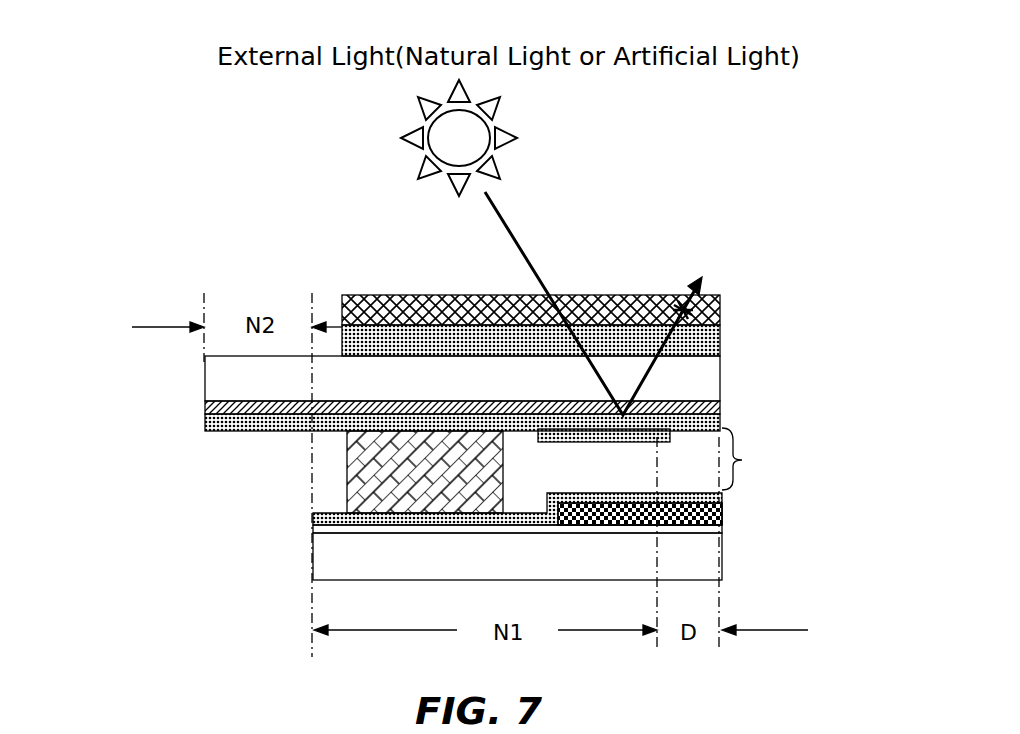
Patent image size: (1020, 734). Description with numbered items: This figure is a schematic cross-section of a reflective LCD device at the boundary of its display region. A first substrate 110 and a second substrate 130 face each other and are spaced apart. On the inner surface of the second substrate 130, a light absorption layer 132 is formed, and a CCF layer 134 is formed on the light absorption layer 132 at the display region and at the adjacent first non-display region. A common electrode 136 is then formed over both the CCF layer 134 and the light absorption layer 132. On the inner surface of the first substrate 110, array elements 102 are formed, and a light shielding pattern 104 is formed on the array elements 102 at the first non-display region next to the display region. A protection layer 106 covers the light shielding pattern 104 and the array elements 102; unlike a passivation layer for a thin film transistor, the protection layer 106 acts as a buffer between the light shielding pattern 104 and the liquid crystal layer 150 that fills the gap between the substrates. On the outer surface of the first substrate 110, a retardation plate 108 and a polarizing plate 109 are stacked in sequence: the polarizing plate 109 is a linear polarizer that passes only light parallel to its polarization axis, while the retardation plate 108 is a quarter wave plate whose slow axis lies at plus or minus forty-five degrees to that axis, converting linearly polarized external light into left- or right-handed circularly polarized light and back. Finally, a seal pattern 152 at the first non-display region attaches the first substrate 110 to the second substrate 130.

The array elements 102 is at (205, 405).
The light shielding pattern 104 is at (586, 442).
The protection layer 106 is at (237, 432).
The retardation plate 108 is at (360, 295).
The polarizing plate 109 is at (625, 295).
The first substrate 110 is at (514, 391).
The second substrate 130 is at (535, 565).
The light absorption layer 132 is at (722, 523).
The CCF layer 134 is at (722, 509).
The common electrode 136 is at (680, 492).
The liquid crystal layer 150 is at (759, 459).
The seal pattern 152 is at (400, 525).